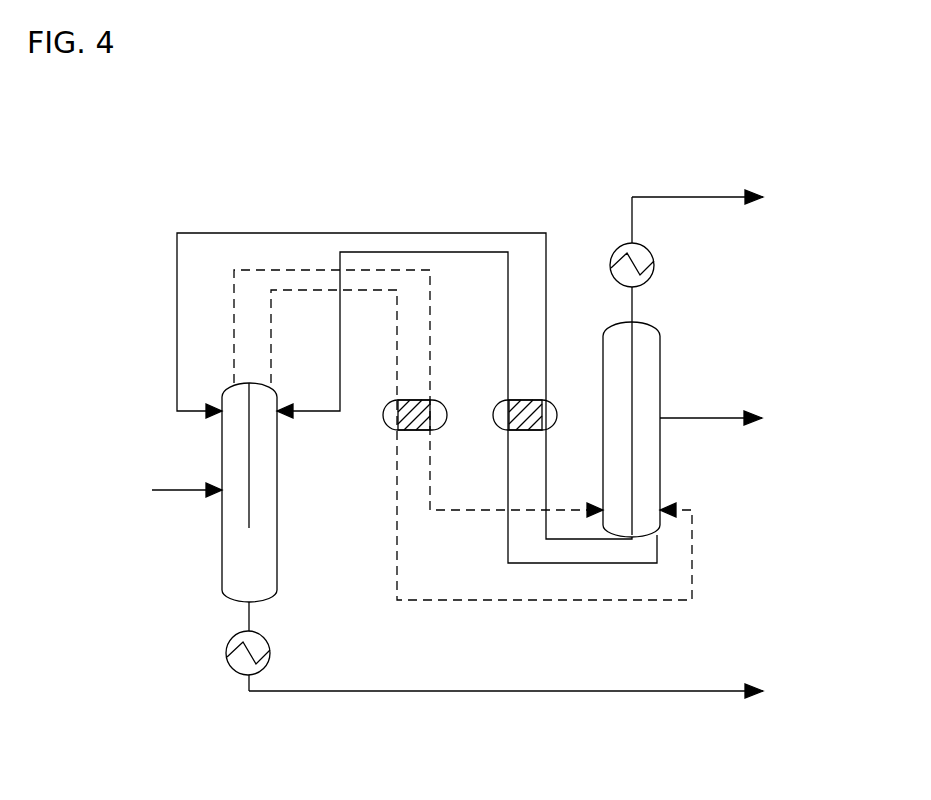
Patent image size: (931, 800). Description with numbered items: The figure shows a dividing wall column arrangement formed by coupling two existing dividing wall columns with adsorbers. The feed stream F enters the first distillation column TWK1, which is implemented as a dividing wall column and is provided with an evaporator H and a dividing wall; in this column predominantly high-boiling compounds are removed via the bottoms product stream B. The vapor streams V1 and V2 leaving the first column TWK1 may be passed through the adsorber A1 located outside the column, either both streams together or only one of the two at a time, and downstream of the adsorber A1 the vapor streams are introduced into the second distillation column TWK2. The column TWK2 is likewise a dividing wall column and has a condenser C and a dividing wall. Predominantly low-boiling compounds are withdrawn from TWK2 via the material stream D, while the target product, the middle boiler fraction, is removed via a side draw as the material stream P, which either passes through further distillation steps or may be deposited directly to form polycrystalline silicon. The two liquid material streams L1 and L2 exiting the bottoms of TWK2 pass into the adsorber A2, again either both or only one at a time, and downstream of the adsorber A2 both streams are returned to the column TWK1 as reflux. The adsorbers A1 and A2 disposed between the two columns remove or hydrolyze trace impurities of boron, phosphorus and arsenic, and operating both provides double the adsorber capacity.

The first distillation column TWK1 is at (249, 492).
The second distillation column TWK2 is at (631, 429).
The first vapor stream V1 is at (400, 393).
The second vapor stream V2 is at (481, 445).
The first liquid stream L1 is at (404, 386).
The second liquid stream L2 is at (467, 407).
The adsorber A1 is at (417, 406).
The adsorber A2 is at (530, 406).
The condenser C is at (645, 259).
The evaporator H is at (261, 646).
The feed stream F is at (186, 483).
The material stream D is at (710, 198).
The material stream P is at (723, 415).
The bottoms product stream B is at (518, 689).